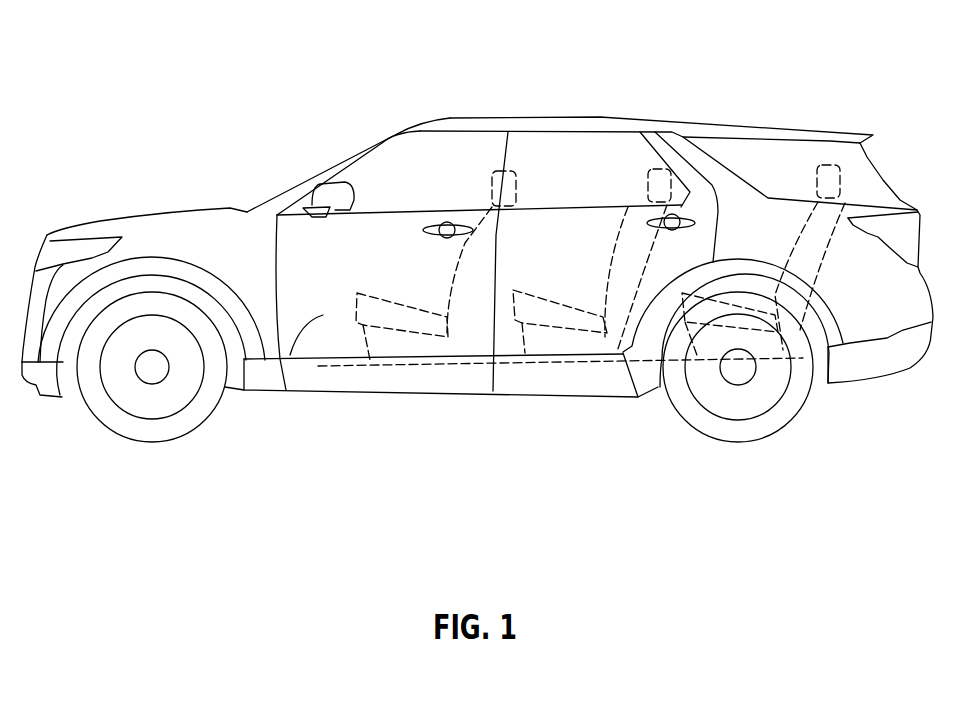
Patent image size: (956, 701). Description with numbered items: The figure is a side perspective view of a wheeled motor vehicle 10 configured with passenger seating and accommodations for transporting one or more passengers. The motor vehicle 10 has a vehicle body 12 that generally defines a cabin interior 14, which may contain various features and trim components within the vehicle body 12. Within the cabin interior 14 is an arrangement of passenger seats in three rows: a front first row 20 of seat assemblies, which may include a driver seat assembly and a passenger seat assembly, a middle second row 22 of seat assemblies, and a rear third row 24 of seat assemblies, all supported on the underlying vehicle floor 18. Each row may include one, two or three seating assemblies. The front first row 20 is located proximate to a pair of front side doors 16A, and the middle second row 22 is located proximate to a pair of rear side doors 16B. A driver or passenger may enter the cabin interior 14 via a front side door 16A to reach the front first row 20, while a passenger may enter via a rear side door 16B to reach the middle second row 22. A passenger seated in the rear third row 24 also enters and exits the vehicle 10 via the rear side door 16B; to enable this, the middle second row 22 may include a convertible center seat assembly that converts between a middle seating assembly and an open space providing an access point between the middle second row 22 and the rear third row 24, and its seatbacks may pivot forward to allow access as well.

The motor vehicle 10 is at (402, 102).
The vehicle body 12 is at (715, 174).
The cabin interior 14 is at (563, 148).
The front side door 16A is at (282, 345).
The rear side door 16B is at (520, 268).
The vehicle floor 18 is at (503, 210).
The front first row of seat assemblies 20 is at (452, 221).
The middle second row of seat assemblies 22 is at (610, 220).
The rear third row of seat assemblies 24 is at (780, 220).